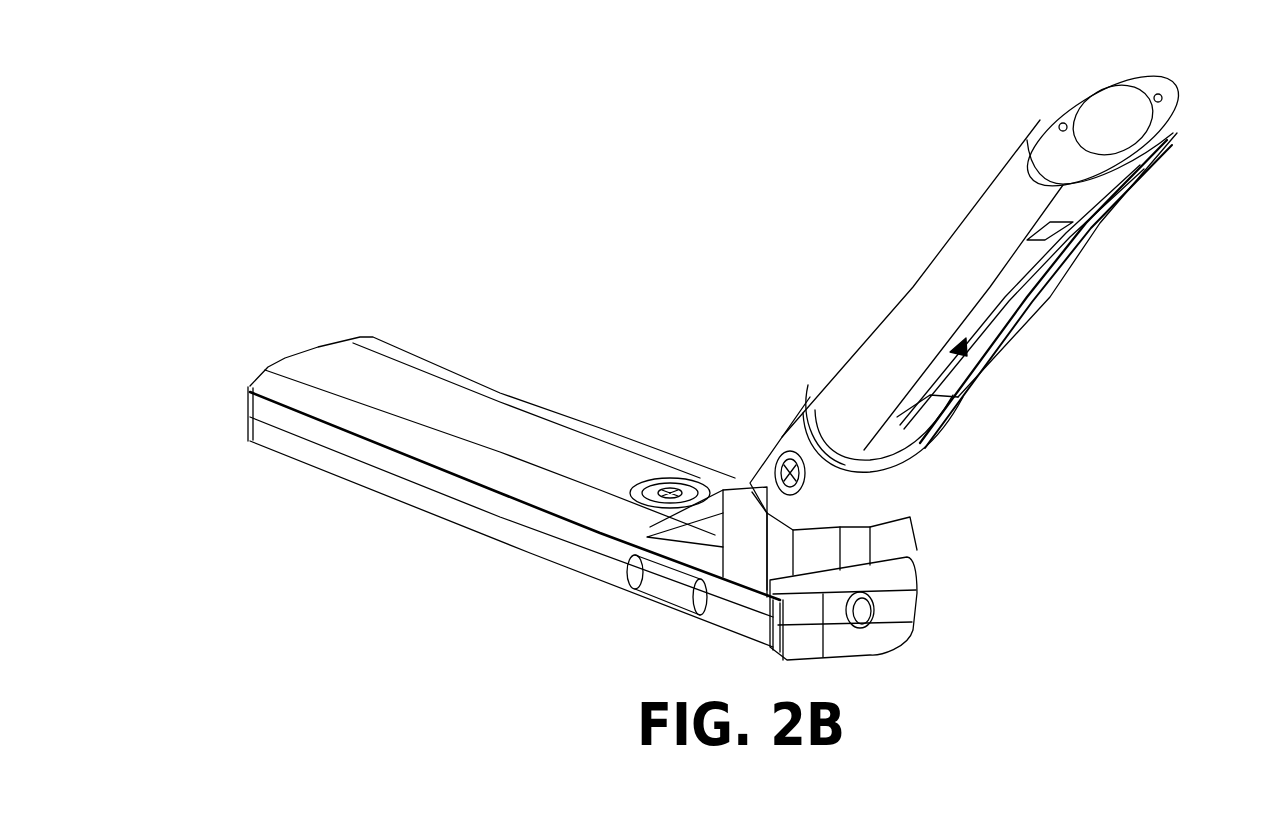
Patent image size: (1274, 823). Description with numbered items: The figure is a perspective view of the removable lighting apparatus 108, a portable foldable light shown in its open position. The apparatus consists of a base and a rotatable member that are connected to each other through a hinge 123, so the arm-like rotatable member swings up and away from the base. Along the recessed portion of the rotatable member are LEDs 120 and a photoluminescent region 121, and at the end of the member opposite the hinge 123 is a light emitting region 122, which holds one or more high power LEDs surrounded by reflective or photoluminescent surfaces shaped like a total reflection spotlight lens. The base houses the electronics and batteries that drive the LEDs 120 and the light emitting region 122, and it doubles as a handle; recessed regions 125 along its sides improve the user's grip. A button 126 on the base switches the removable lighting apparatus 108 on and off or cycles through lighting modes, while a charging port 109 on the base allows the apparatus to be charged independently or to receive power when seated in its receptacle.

The removable lighting apparatus 108 is at (334, 118).
The charging port 109 is at (865, 607).
The LEDs 120 is at (963, 350).
The photoluminescent region 121 is at (1005, 305).
The light emitting region 122 is at (1117, 107).
The hinge 123 is at (858, 543).
The recessed region 125 is at (653, 578).
The button 126 is at (673, 480).